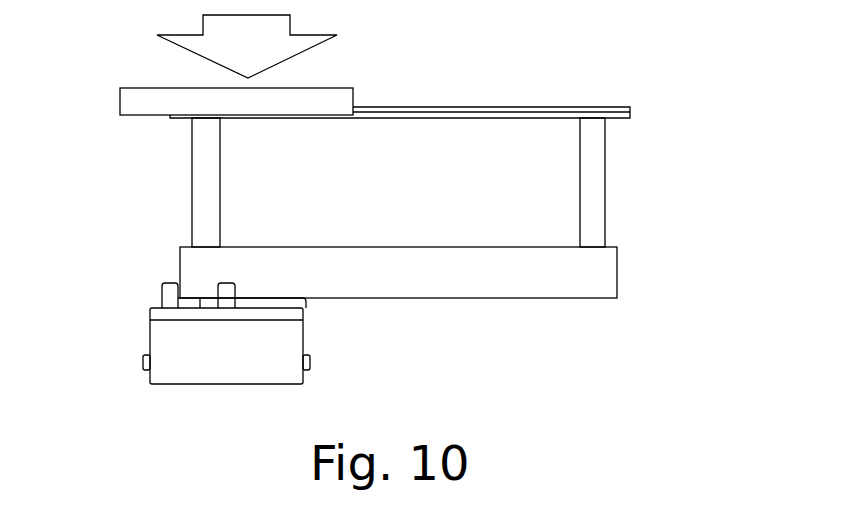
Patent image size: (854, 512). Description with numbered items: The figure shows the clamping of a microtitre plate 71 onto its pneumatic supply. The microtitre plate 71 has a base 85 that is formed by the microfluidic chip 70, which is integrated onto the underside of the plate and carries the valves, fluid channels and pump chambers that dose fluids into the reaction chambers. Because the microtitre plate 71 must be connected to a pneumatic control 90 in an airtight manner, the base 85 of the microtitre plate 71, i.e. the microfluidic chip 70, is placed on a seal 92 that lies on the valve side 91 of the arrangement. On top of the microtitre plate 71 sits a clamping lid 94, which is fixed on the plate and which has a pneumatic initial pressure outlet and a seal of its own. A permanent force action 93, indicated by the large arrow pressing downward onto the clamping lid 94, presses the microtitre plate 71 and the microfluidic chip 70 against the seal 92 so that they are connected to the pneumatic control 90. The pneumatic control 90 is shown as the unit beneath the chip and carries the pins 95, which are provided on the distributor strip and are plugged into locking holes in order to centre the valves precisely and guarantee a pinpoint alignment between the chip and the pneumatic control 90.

The permanent force action 93 is at (330, 43).
The clamping lid 94 is at (345, 100).
The microtitre plate 71 is at (415, 195).
The base of the microtitre plate 85 is at (563, 248).
The microfluidic chip 70 is at (460, 285).
The valve side 91 is at (152, 165).
The pins 95 is at (222, 285).
The seal 92 is at (318, 304).
The pneumatic control 90 is at (326, 347).